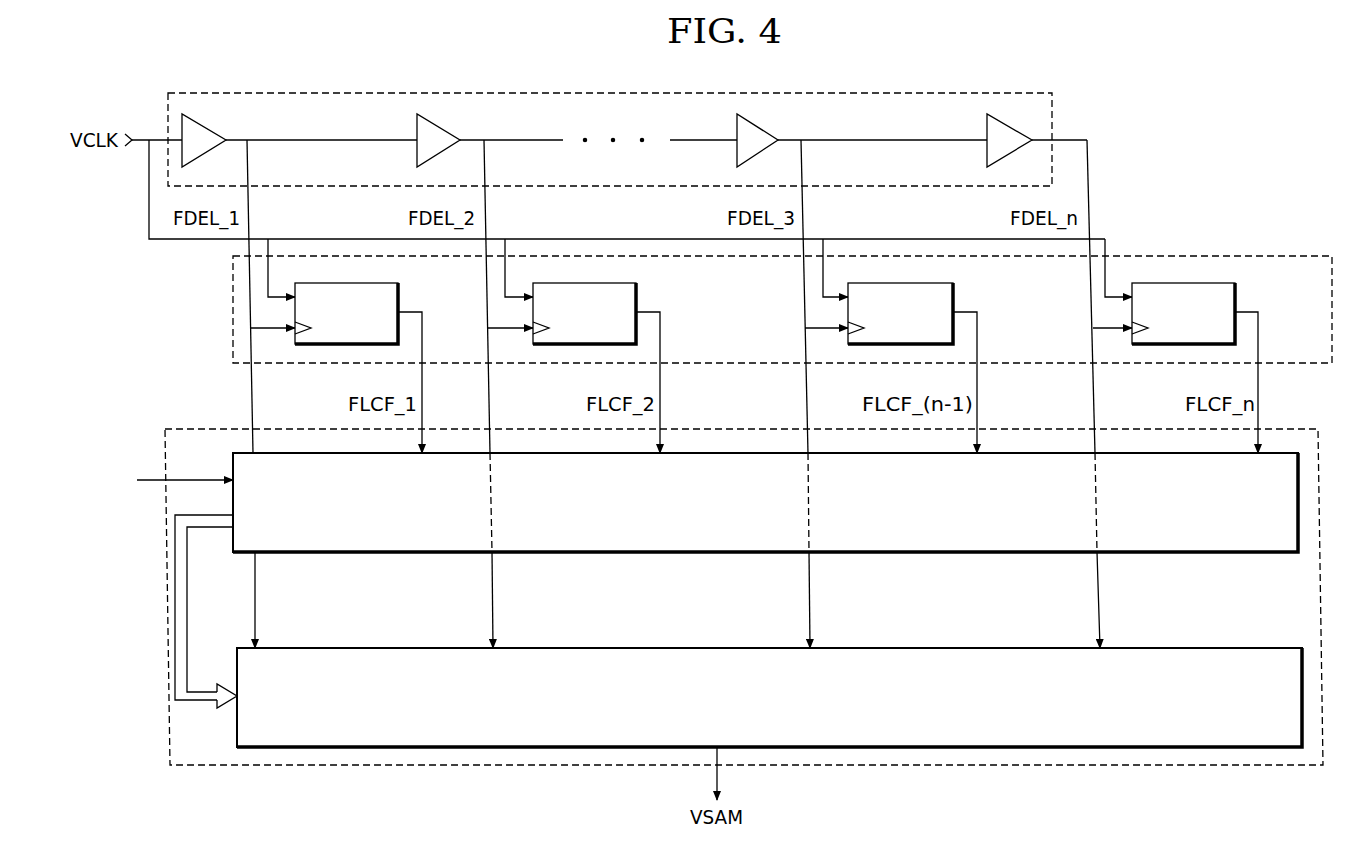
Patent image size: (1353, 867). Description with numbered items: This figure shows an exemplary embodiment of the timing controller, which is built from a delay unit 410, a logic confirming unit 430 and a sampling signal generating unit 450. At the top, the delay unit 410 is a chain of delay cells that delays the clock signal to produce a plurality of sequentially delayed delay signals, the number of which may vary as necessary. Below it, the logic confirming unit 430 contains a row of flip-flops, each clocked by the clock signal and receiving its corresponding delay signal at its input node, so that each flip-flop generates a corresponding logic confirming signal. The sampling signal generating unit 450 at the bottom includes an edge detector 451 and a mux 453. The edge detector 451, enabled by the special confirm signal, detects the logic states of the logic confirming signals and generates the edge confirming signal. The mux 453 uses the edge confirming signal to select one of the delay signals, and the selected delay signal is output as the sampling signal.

The delay unit 410 is at (955, 93).
The logic confirming unit 430 is at (1213, 256).
The sampling signal generating unit 450 is at (1275, 429).
The edge detector 451 is at (1168, 551).
The mux 453 is at (1167, 648).